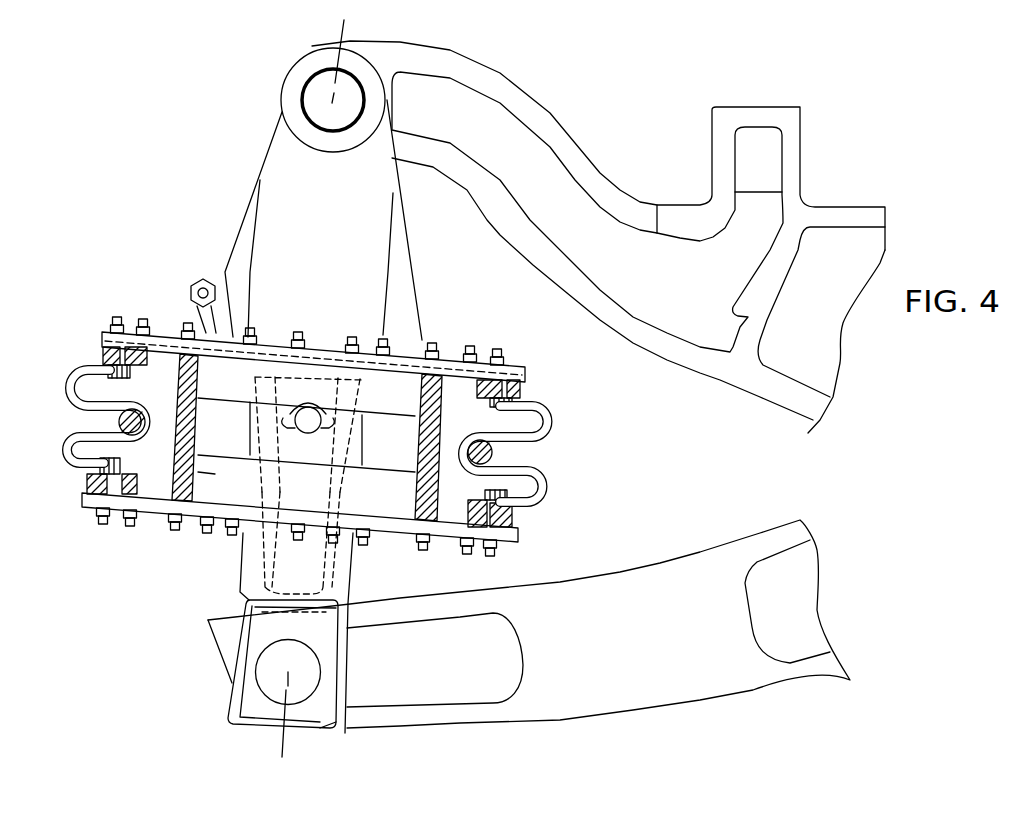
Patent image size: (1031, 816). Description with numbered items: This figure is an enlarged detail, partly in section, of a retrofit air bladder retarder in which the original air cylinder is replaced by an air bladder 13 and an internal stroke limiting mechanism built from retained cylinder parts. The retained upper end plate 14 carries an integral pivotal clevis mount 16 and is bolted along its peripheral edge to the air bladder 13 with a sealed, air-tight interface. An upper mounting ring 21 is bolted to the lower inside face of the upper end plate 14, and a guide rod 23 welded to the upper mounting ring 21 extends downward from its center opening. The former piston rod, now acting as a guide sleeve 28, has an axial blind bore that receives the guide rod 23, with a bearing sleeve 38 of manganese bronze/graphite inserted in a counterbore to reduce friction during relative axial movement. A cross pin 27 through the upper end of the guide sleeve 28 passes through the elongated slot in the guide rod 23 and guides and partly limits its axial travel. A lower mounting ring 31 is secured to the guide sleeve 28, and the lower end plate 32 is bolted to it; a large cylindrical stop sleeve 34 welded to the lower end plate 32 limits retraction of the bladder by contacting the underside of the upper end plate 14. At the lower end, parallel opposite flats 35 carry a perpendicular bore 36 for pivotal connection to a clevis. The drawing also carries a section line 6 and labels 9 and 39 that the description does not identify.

The section line 6- 6 is at (336, 28).
The lever arm 9 is at (667, 91).
The air bladder 13 is at (67, 384).
The upper end plate 14 is at (160, 340).
The pivotal clevis mount 16 is at (313, 234).
The upper mounting ring 21 is at (243, 373).
The guide rod 23 is at (330, 567).
The cross pin 27 is at (313, 417).
The guide sleeve 28 is at (248, 573).
The lower mounting ring 31 is at (208, 483).
The lower end plate 32 is at (158, 507).
The stop sleeve 34 is at (192, 413).
The flats 35 is at (260, 635).
The bore 36 is at (258, 674).
The bearing sleeve 38 is at (342, 439).
The side wall 39 is at (447, 370).